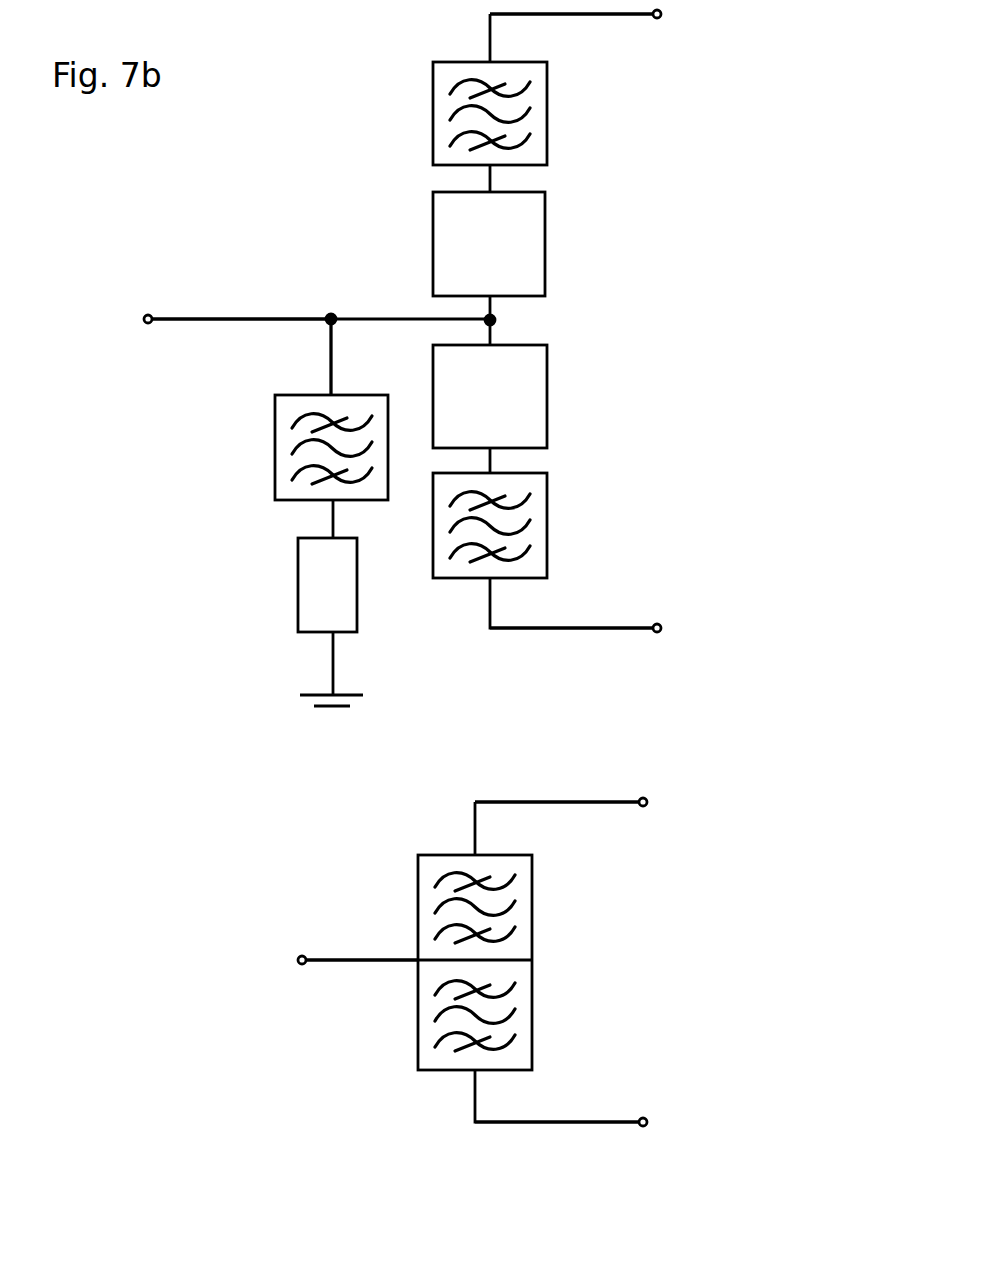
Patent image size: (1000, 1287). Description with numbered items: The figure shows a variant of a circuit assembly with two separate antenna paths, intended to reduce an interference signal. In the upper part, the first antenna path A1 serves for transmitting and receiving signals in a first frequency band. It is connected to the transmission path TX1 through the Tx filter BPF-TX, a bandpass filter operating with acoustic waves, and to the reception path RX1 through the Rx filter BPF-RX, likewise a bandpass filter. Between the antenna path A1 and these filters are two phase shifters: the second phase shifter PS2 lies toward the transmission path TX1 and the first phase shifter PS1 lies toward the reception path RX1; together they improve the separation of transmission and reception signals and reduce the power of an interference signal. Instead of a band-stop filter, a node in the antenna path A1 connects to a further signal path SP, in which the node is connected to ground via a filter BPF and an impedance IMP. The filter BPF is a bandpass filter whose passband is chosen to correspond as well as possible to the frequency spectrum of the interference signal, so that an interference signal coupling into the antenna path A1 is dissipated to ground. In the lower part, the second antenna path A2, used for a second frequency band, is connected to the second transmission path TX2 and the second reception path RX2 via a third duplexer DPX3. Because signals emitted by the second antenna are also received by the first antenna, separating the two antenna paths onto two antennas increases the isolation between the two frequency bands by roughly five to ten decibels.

The transmission path TX1 is at (592, 14).
The Tx filter BPF-TX is at (532, 125).
The first phase shifter PS1 is at (528, 267).
The second phase shifter PS2 is at (528, 390).
The Rx filter BPF-RX is at (518, 497).
The reception path RX1 is at (605, 622).
The antenna path A1 is at (237, 319).
The further signal path SP is at (331, 366).
The filter BPF is at (290, 462).
The impedance IMP is at (335, 598).
The third duplexer DPX3 is at (553, 958).
The second transmission path TX2 is at (523, 802).
The second antenna path A2 is at (357, 960).
The second reception path RX2 is at (547, 1118).